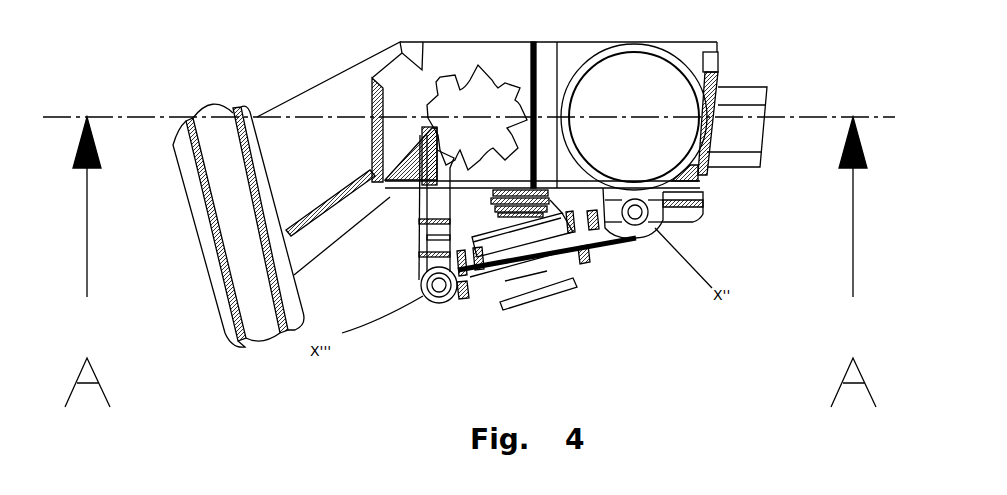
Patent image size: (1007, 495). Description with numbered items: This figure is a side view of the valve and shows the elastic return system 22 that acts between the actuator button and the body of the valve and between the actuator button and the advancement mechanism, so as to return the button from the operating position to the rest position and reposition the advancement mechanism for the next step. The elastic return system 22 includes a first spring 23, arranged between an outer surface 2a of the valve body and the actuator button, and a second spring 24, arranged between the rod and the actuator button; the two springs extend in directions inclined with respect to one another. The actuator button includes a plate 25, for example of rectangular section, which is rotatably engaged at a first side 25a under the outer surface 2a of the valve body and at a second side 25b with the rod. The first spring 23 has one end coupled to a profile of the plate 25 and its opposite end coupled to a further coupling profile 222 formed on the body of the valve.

The elastic return system 22 is at (458, 299).
The first spring 23 is at (500, 195).
The coupling profile 222 is at (492, 206).
The second spring 24 is at (582, 245).
The plate 25 is at (582, 245).
The first side 25a is at (704, 224).
The second side 25b is at (478, 310).
The outer surface 2a is at (695, 204).